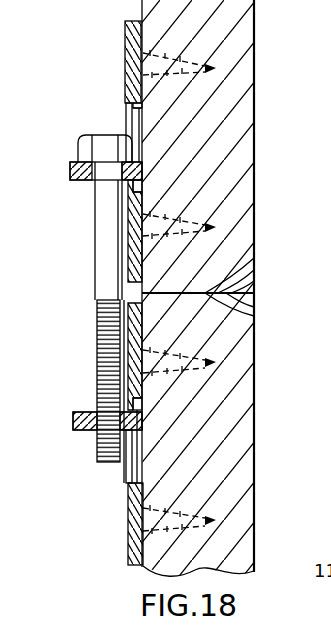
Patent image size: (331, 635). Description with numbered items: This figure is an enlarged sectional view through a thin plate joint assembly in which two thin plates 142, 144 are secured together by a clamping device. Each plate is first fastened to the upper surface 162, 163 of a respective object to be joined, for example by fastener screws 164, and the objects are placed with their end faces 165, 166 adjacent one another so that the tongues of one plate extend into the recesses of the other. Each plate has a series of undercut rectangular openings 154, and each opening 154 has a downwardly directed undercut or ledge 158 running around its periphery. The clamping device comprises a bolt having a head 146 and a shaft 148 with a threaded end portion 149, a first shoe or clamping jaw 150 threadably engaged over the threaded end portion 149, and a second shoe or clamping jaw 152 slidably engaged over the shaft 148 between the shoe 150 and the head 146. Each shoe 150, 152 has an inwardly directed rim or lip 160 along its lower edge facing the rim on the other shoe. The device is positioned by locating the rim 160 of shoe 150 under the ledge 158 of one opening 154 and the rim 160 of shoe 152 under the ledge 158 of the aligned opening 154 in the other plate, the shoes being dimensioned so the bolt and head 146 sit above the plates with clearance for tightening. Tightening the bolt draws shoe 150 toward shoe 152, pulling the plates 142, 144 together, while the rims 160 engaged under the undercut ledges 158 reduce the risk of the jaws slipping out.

The plate 142 is at (125, 30).
The plate 144 is at (128, 540).
The head 146 is at (80, 148).
The shaft 148 is at (105, 243).
The threaded end portion 149 is at (100, 385).
The first shoe or clamping jaw 150 is at (75, 428).
The second shoe or clamping jaw 152 is at (72, 170).
The undercut rectangular opening 154 is at (127, 117).
The undercut or ledge 158 is at (143, 103).
The rim or lip 160 is at (137, 186).
The upper surface 162 is at (246, 33).
The upper surface 163 is at (230, 448).
The fastener screws 164 is at (205, 67).
The end face 165 is at (256, 265).
The end face 166 is at (240, 312).